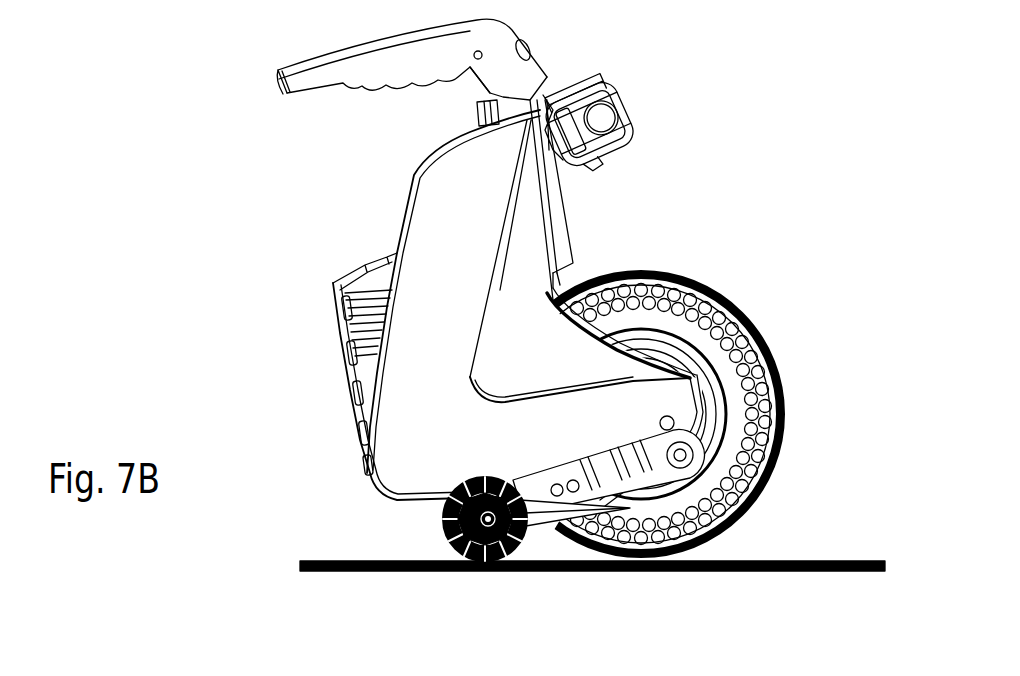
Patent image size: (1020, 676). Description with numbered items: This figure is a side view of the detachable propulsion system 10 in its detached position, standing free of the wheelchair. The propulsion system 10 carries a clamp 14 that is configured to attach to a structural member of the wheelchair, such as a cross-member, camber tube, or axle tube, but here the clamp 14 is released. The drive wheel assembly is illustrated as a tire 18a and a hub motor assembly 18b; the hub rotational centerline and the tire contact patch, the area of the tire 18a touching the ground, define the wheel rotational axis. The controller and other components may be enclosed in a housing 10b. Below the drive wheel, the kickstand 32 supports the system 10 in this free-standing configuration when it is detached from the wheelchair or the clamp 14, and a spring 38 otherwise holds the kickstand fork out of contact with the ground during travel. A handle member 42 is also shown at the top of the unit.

The detachable propulsion system 10 is at (692, 170).
The housing 10b is at (425, 247).
The clamp 14 is at (640, 101).
The tire 18a is at (722, 293).
The hub motor assembly 18b is at (708, 372).
The kickstand 32 is at (415, 535).
The spring 38 is at (707, 458).
The handle 42 is at (388, 100).